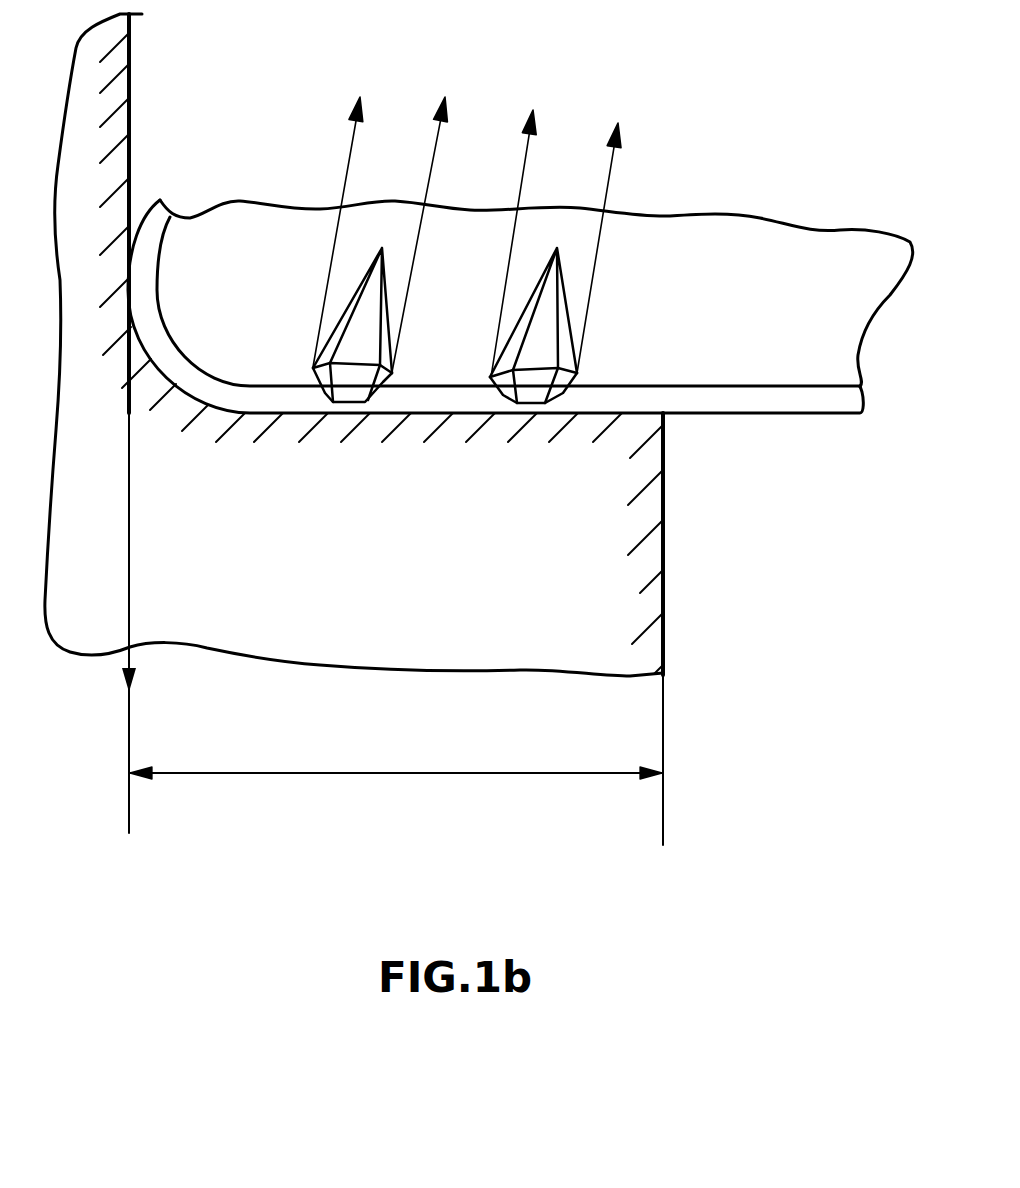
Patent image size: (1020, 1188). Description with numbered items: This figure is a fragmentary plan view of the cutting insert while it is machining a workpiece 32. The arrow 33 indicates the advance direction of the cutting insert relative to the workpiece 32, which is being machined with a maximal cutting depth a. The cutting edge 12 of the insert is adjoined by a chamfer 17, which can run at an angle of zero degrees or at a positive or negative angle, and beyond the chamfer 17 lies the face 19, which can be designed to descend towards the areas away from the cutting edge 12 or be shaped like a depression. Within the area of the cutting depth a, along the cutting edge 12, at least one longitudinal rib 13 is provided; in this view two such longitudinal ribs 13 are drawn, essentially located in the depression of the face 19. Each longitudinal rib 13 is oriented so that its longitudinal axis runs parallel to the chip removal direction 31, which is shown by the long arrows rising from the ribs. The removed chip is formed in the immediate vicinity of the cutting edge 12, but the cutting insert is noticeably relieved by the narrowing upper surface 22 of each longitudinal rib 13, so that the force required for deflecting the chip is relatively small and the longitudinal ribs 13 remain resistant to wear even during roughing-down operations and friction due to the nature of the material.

The cutting edge 12 is at (737, 415).
The longitudinal rib 13 is at (403, 323).
The chamfer 17 is at (817, 400).
The face 19 is at (242, 247).
The narrowing upper surface 22 is at (357, 331).
The chip removal direction 31 is at (350, 188).
The workpiece 32 is at (585, 607).
The arrow 33 is at (130, 542).
The cutting depth a is at (377, 773).